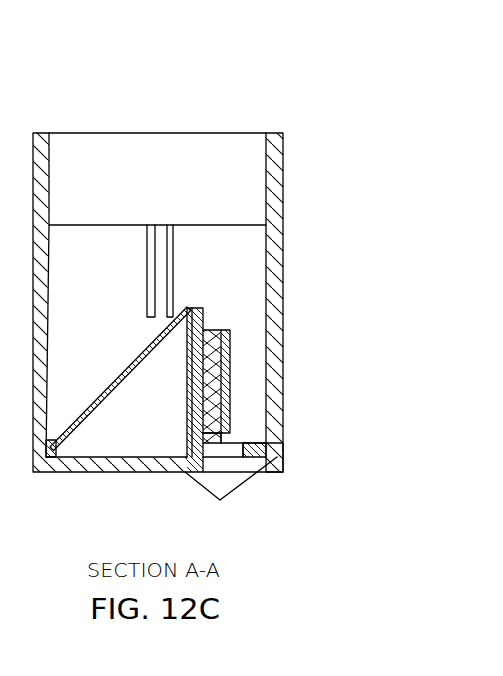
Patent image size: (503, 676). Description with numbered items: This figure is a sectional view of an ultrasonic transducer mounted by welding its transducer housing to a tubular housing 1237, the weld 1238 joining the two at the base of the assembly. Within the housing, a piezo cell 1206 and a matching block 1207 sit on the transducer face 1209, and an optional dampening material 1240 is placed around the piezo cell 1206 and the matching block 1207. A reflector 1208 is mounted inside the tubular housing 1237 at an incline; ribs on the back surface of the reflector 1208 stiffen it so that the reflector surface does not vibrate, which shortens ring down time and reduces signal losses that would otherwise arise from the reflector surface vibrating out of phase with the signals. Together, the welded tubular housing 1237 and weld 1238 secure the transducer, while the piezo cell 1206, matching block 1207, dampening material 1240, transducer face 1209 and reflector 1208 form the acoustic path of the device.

The tubular housing 1237 is at (283, 276).
The dampening material 1240 is at (190, 305).
The piezo cell 1206 is at (203, 363).
The matching block 1207 is at (195, 395).
The reflector 1208 is at (88, 417).
The transducer face 1209 is at (167, 447).
The weld 1238 is at (282, 460).